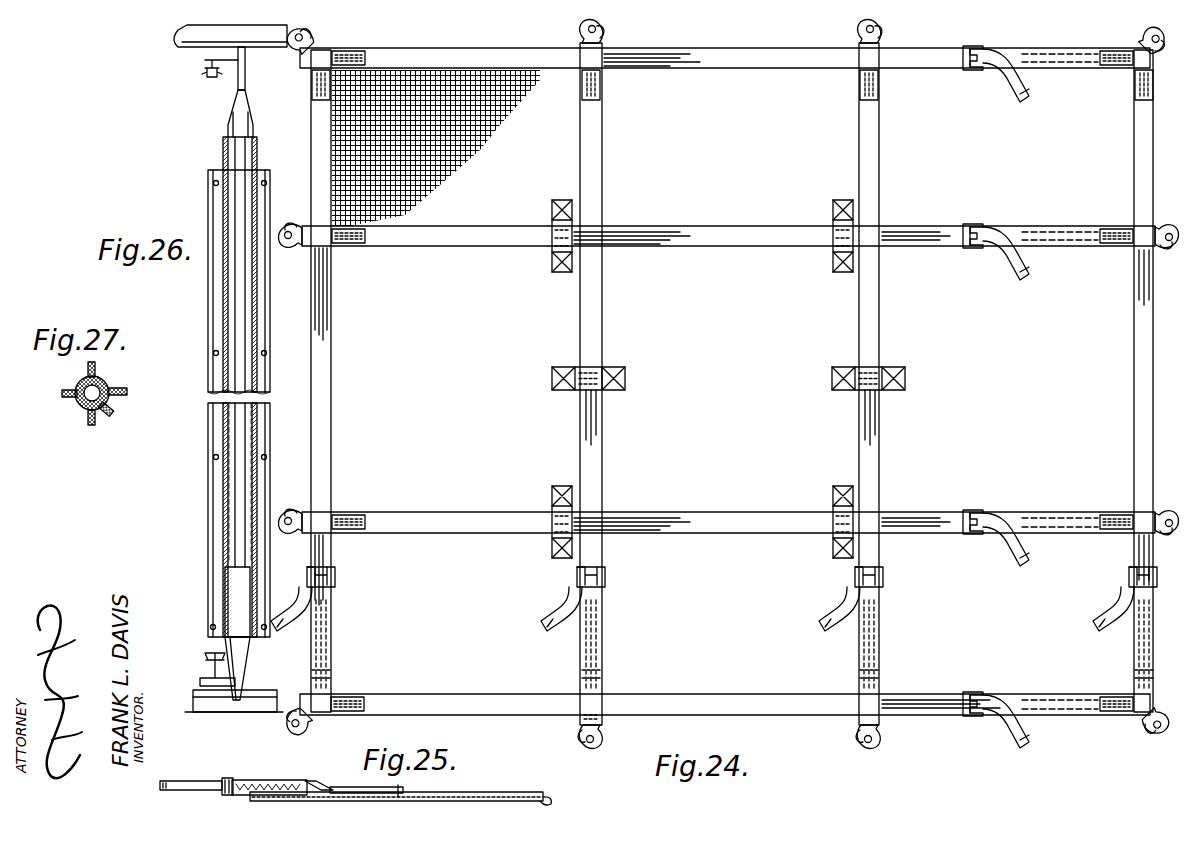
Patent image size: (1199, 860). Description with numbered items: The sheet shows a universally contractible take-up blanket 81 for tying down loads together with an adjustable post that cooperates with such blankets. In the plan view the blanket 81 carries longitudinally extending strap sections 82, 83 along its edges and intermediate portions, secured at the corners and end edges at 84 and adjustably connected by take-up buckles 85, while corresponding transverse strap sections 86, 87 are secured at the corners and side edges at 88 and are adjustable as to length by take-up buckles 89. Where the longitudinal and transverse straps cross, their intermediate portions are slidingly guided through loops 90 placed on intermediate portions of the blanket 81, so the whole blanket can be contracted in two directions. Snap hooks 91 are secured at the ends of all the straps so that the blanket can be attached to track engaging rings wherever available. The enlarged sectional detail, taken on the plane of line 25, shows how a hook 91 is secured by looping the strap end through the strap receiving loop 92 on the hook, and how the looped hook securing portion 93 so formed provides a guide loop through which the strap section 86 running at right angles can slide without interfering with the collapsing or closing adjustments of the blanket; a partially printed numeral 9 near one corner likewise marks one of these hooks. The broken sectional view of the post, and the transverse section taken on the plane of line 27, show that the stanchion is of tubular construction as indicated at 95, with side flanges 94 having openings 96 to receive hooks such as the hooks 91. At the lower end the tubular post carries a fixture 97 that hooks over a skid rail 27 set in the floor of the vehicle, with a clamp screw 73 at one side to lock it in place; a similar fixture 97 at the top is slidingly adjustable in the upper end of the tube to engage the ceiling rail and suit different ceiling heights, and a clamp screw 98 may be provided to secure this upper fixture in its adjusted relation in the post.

In FIG. 24, the hook (partially printed 91) 9 is at (1148, 728).
In FIG. 24, the section line 25— 25 is at (373, 263).
In FIG. 24, the skid rail 27 is at (293, 210).
In FIG. 26, the skid rail 27 is at (190, 45).
In FIG. 26, the clamp screw 73 is at (205, 68).
In FIG. 24, the blanket 81 is at (410, 95).
In FIG. 25, the blanket 81 is at (552, 799).
In FIG. 24, the longitudinal strap section 82 is at (525, 54).
In FIG. 25, the longitudinal strap section 82 is at (510, 792).
In FIG. 24, the longitudinal strap section 83 is at (1075, 56).
In FIG. 24, the strap securement 84 is at (350, 52).
In FIG. 24, the take-up buckle 85 is at (978, 50).
In FIG. 24, the transverse strap section 86 is at (312, 125).
In FIG. 25, the transverse strap section 86 is at (312, 783).
In FIG. 24, the transverse strap section 87 is at (1138, 648).
In FIG. 24, the strap securement 88 is at (328, 672).
In FIG. 24, the take-up buckle 89 is at (335, 577).
In FIG. 24, the loop 90 is at (560, 236).
In FIG. 24, the snap hook 91 is at (306, 40).
In FIG. 25, the snap hook 91 is at (178, 780).
In FIG. 24, the strap receiving loop 92 is at (603, 722).
In FIG. 25, the strap receiving loop 92 is at (228, 779).
In FIG. 24, the looped hook securing portion 93 is at (320, 238).
In FIG. 25, the looped hook securing portion 93 is at (286, 780).
In FIG. 26, the edge flange 94 is at (208, 172).
In FIG. 27, the edge flange 94 is at (96, 366).
In FIG. 26, the tubular construction 95 is at (224, 430).
In FIG. 27, the tubular construction 95 is at (70, 396).
In FIG. 26, the opening 96 is at (214, 353).
In FIG. 26, the fixture 97 is at (235, 118).
In FIG. 27, the fixture 97 is at (78, 385).
In FIG. 27, the clamp screw 98 is at (108, 412).